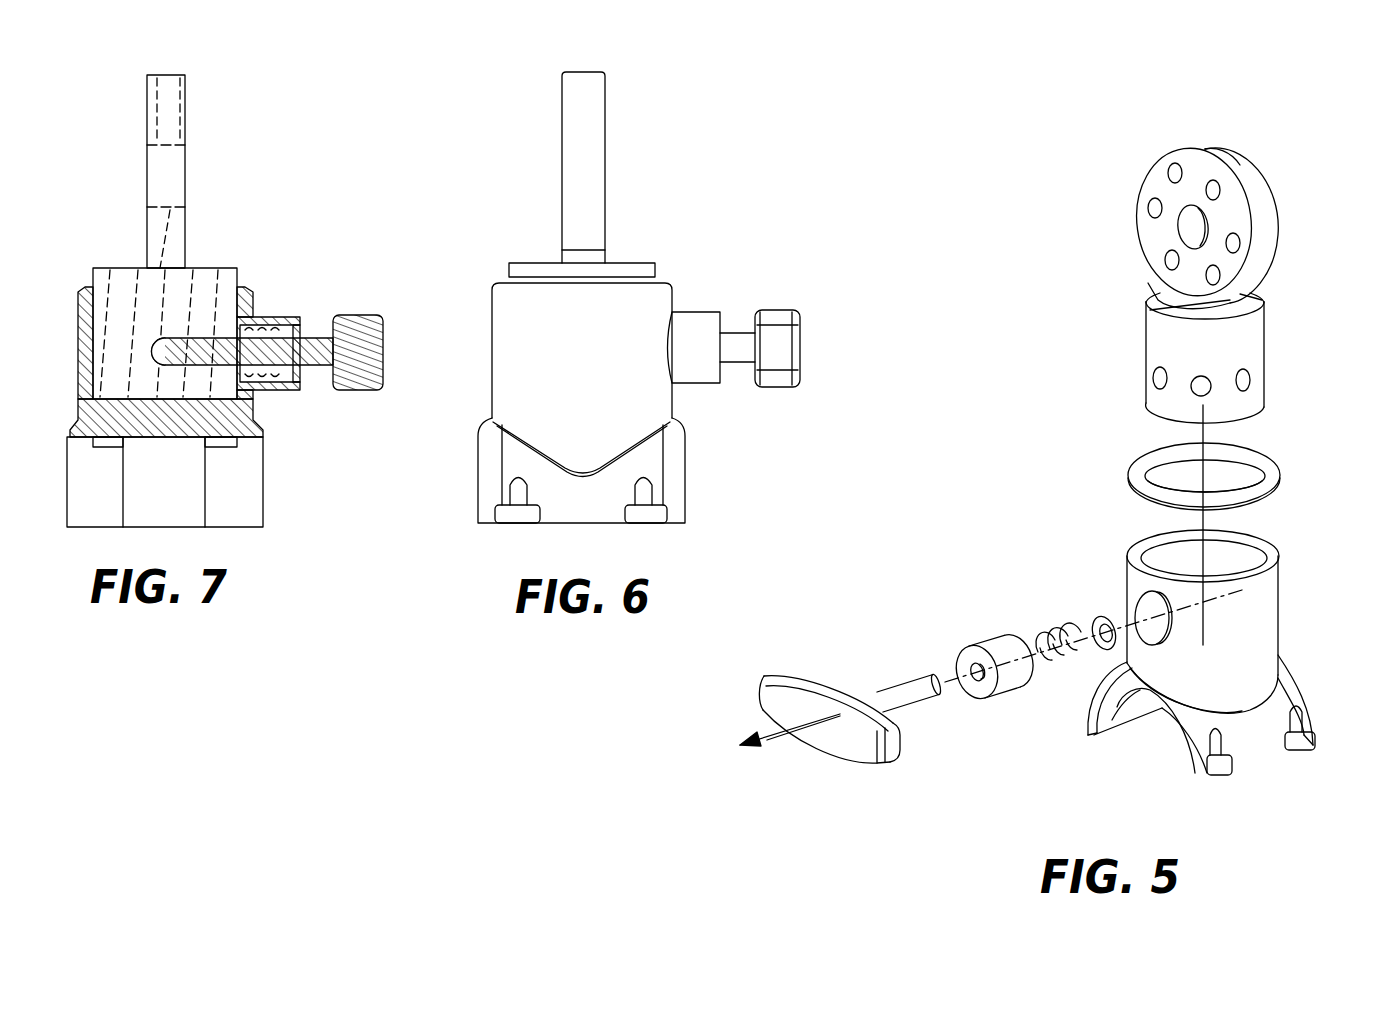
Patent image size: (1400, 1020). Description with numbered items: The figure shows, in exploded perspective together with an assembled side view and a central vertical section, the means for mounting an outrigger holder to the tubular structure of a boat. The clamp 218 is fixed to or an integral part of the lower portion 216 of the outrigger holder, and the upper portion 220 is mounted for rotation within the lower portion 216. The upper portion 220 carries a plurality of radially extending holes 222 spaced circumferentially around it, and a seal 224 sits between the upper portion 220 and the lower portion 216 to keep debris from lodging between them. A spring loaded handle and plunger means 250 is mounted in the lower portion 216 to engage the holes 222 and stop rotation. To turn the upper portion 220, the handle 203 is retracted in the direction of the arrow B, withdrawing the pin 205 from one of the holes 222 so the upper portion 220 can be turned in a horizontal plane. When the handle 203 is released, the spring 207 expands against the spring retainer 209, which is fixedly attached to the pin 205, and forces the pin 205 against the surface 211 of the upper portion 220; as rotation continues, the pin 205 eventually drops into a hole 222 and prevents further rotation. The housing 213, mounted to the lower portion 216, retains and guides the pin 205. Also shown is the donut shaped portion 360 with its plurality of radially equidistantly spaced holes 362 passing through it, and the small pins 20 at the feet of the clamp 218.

In FIG. 5, the mounting pins 20 is at (1222, 740).
In FIG. 5, the handle 203 is at (760, 699).
In FIG. 5, the pin 205 is at (890, 687).
In FIG. 5, the spring 207 is at (1056, 630).
In FIG. 5, the spring retainer 209 is at (1100, 615).
In FIG. 5, the surface 211 is at (1222, 362).
In FIG. 5, the housing 213 is at (992, 638).
In FIG. 7, the lower portion of the outrigger holder 216 is at (240, 277).
In FIG. 6, the lower portion of the outrigger holder 216 is at (673, 300).
In FIG. 5, the lower portion of the outrigger holder 216 is at (1279, 576).
In FIG. 5, the clamp 218 is at (1298, 673).
In FIG. 5, the upper portion of the outrigger holder 220 is at (1162, 347).
In FIG. 5, the holes 222 is at (1152, 376).
In FIG. 5, the seal 224 is at (1130, 476).
In FIG. 5, the spring loaded handle and plunger means 250 is at (930, 642).
In FIG. 5, the donut shaped portion 360 is at (1220, 206).
In FIG. 5, the holes 362 is at (1168, 170).